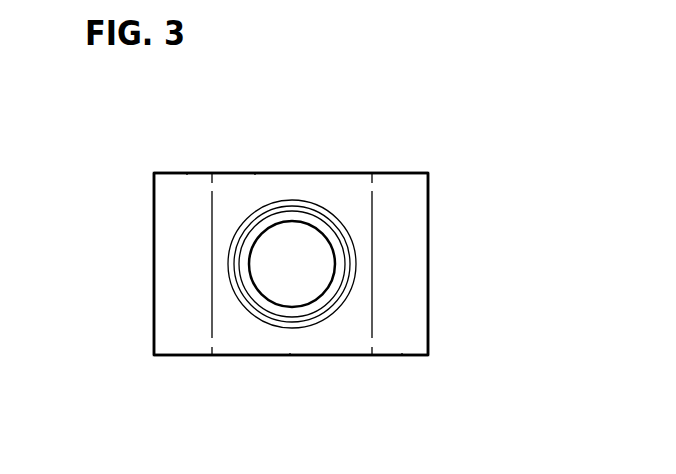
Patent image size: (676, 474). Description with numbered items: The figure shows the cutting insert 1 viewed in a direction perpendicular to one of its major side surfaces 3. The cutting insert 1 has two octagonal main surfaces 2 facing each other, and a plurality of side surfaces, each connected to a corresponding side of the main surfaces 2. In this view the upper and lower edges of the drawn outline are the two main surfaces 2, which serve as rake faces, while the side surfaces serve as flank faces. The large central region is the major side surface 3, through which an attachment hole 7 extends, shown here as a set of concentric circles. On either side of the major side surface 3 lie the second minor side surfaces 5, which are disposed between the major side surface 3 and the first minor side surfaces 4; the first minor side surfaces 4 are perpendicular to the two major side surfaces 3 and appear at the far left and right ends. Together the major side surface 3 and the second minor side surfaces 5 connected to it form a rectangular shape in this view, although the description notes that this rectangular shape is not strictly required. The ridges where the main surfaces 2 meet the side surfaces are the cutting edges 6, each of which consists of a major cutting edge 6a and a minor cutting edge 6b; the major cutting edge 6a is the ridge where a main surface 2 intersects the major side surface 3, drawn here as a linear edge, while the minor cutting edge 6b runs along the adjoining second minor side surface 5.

The cutting insert 1 is at (437, 223).
The main surface 2 is at (412, 170).
The major side surface 3 is at (240, 340).
The first minor side surface 4 is at (428, 265).
The second minor side surface 5 is at (410, 317).
The cutting edge 6 is at (180, 115).
The major cutting edge 6a is at (255, 173).
The minor cutting edge 6b is at (187, 173).
The attachment hole 7 is at (307, 238).